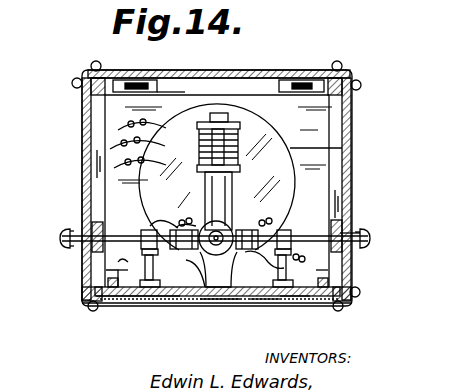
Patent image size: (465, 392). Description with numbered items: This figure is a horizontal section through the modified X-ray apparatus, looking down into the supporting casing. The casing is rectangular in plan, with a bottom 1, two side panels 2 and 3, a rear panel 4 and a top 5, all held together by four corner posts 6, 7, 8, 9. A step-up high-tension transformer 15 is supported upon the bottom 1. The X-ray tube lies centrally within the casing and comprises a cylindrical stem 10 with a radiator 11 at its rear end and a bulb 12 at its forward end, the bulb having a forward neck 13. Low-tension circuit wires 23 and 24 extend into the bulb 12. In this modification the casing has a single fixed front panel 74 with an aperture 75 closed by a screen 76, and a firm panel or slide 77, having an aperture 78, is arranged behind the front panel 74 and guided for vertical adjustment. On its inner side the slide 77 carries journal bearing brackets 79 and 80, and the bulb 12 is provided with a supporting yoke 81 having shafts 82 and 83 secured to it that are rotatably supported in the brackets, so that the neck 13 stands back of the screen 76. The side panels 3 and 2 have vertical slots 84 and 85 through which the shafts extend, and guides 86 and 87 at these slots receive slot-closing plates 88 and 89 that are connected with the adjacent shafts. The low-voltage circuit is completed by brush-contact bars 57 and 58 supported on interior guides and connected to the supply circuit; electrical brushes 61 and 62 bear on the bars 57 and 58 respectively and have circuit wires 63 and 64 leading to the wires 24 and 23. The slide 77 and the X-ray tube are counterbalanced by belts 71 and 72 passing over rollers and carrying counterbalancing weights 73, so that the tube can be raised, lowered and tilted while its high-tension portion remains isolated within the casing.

The bottom 1 is at (331, 125).
The side panel 2 is at (82, 172).
The side panel 3 is at (349, 168).
The rear panel 4 is at (222, 73).
The top 5 is at (217, 295).
The corner post 6 is at (90, 293).
The corner post 7 is at (352, 296).
The corner post 8 is at (99, 70).
The corner post 9 is at (337, 72).
The cylindrical stem 10 is at (204, 190).
The radiator 11 is at (205, 126).
The bulb 12 is at (224, 295).
The forward neck 13 is at (192, 290).
The step-up high-tension transformer 15 is at (342, 148).
The low-tension circuit wire 23 is at (186, 226).
The low-tension circuit wire 24 is at (258, 230).
The brush-contact bar 57 is at (322, 298).
The brush-contact bar 58 is at (78, 292).
The electrical brush 61 is at (288, 282).
The electrical brush 62 is at (146, 282).
The circuit wire 63 is at (272, 267).
The circuit wire 64 is at (165, 294).
The belt 71 is at (302, 82).
The belt 72 is at (139, 83).
The counterbalancing weight 73 is at (163, 93).
The fixed front panel 74 is at (108, 303).
The aperture 75 is at (128, 296).
The screen 76 is at (214, 300).
The slide 77 is at (290, 303).
The aperture 78 is at (262, 303).
The journal bearing bracket 79 is at (290, 235).
The journal bearing bracket 80 is at (148, 238).
The supporting yoke 81 is at (142, 208).
The shaft 82 is at (357, 236).
The shaft 83 is at (142, 236).
The vertical slot 84 is at (350, 255).
The vertical slot 85 is at (95, 236).
The guide 86 is at (334, 228).
The guide 87 is at (118, 264).
The slot-closing plate 88 is at (344, 243).
The slot-closing plate 89 is at (72, 246).